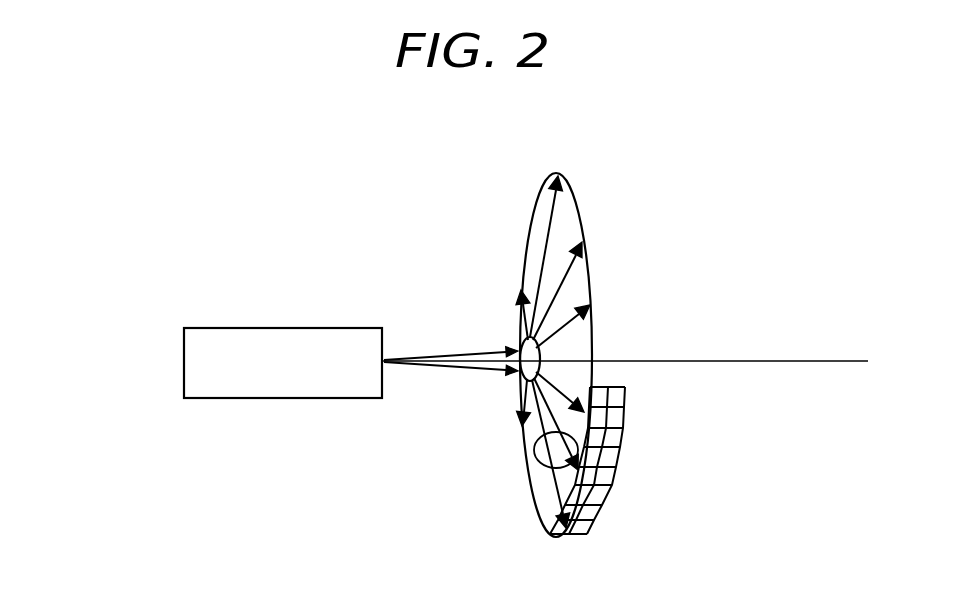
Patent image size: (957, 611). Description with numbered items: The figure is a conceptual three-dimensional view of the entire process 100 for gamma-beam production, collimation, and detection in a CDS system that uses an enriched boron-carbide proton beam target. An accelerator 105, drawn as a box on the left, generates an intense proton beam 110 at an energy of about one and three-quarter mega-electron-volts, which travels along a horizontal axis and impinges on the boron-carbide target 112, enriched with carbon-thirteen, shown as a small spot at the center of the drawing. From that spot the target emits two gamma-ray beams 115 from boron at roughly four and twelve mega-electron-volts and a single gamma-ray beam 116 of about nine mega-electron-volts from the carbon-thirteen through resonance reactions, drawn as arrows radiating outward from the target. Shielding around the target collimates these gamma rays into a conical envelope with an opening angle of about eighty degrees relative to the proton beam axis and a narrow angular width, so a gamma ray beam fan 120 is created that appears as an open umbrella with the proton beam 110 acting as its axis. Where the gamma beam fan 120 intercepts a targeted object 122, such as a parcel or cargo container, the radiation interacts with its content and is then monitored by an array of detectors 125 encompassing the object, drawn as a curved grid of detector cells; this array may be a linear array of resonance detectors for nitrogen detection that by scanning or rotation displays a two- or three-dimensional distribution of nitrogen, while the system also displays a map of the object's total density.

The process 100 is at (486, 180).
The accelerator 105 is at (184, 360).
The proton beam 110 is at (480, 350).
The boron-carbide target 112 is at (520, 388).
The gamma-ray beams 115 is at (584, 242).
The gamma-ray beam 116 is at (562, 176).
The gamma ray beam fan 120 is at (587, 350).
The targeted object 122 is at (600, 437).
The array of detectors 125 is at (612, 504).